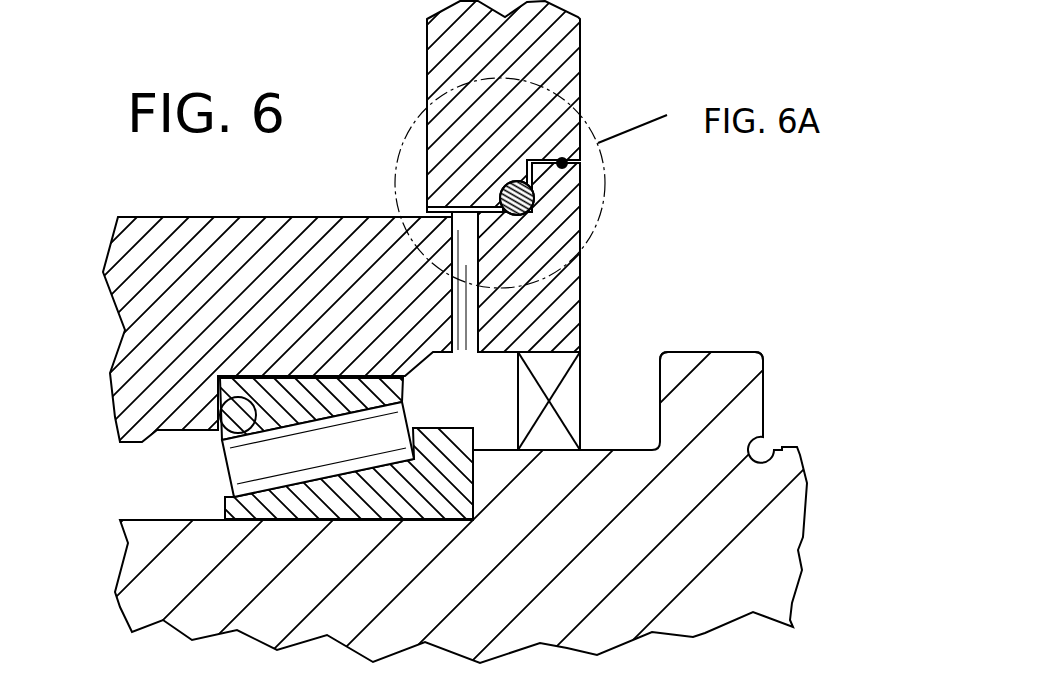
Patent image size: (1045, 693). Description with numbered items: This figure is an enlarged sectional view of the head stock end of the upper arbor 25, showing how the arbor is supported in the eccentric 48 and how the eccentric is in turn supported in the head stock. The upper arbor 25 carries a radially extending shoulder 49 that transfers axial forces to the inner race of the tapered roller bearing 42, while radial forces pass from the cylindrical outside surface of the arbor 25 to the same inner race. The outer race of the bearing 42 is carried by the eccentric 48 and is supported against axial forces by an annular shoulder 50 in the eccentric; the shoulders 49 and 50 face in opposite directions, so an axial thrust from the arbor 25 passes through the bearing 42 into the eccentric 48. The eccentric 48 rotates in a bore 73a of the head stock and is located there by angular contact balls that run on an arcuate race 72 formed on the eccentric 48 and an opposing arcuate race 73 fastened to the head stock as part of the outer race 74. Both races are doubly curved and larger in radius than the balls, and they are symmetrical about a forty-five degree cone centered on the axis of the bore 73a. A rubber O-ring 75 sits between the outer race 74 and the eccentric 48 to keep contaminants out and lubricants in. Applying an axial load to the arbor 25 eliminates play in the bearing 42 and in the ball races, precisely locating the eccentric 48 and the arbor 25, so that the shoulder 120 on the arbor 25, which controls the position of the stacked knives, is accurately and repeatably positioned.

The outer race 74 is at (548, 123).
The arcuate race 73 is at (500, 182).
The bore 73a is at (427, 212).
The rubber O-ring 75 is at (567, 167).
The arcuate race 72 is at (505, 222).
The eccentric 48 is at (572, 310).
The upper arbor 25 is at (712, 363).
The shoulder 120 is at (763, 398).
The annular shoulder 50 is at (226, 450).
The shoulder 49 is at (467, 471).
The bearing 42 is at (147, 497).